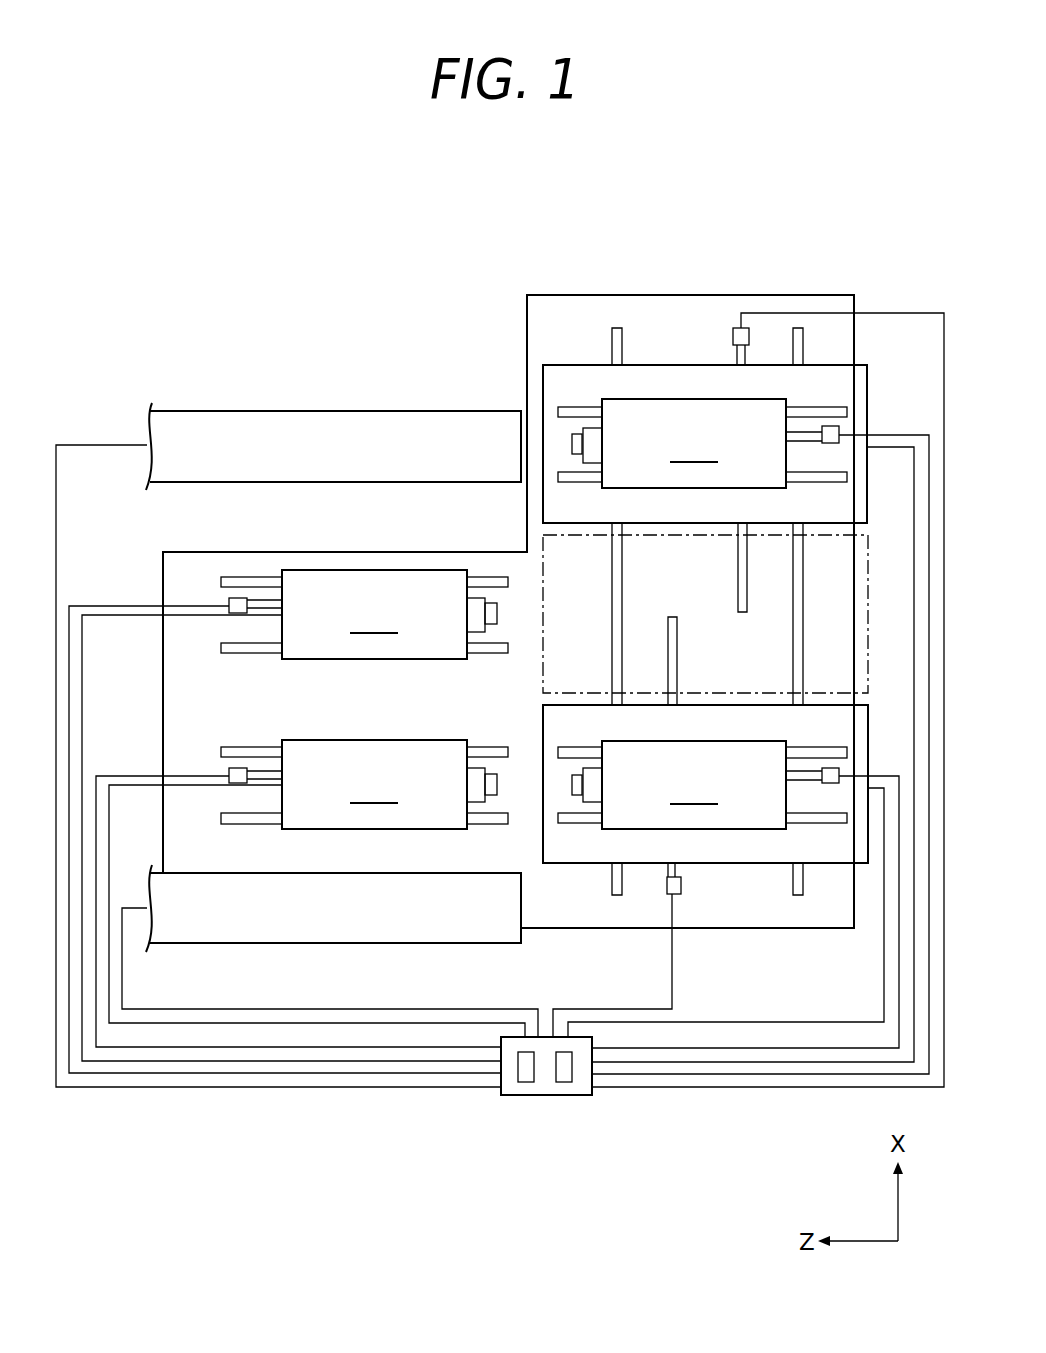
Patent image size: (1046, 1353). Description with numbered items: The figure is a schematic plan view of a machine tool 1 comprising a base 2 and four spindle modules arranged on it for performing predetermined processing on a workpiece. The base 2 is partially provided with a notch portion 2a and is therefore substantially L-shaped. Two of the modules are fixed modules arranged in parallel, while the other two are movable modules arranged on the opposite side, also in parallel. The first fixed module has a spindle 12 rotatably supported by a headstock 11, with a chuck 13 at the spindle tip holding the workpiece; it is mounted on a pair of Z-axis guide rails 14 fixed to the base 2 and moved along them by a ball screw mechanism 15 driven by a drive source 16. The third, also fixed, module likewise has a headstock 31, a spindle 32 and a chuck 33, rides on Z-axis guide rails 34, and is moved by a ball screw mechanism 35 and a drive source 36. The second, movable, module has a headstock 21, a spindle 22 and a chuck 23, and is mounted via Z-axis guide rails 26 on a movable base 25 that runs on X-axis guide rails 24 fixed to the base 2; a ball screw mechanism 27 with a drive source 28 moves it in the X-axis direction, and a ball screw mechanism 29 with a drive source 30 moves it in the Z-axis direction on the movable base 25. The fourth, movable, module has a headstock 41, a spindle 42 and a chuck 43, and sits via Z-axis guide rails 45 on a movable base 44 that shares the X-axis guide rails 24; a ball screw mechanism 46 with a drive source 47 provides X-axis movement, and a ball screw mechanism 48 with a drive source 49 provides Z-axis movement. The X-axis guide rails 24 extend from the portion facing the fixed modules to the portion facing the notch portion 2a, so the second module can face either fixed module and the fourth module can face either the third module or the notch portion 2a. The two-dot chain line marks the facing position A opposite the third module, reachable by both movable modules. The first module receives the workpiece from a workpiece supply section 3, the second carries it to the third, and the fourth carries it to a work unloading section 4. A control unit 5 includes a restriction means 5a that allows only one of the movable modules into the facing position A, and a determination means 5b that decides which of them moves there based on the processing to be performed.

The machine tool 1 is at (801, 203).
The base 2 is at (823, 295).
The notch portion 2a is at (527, 341).
The workpiece supply section 3 is at (335, 930).
The work unloading section 4 is at (327, 423).
The control unit 5 is at (545, 1107).
The restriction means 5a is at (525, 1072).
The determination means 5b is at (565, 1072).
The headstock 11 is at (373, 747).
The spindle 12 is at (470, 780).
The chuck 13 is at (490, 773).
The Z-axis guide rails 14 is at (273, 753).
The ball screw mechanism 15 is at (258, 773).
The drive source 16 is at (229, 772).
The headstock 21 is at (705, 750).
The spindle 22 is at (595, 788).
The chuck 23 is at (578, 778).
The X-axis guide rails 24 is at (612, 882).
The movable base 25 is at (700, 855).
The Z-axis guide rails 26 is at (822, 752).
The ball screw mechanism 27 is at (667, 882).
The drive source 28 is at (668, 900).
The ball screw mechanism 29 is at (800, 774).
The drive source 30 is at (839, 773).
The headstock 31 is at (377, 572).
The spindle 32 is at (470, 610).
The chuck 33 is at (490, 602).
The Z-axis guide rails 34 is at (273, 583).
The ball screw mechanism 35 is at (258, 603).
The drive source 36 is at (229, 602).
The headstock 41 is at (738, 407).
The spindle 42 is at (595, 445).
The chuck 43 is at (578, 437).
The movable base 44 is at (664, 380).
The Z-axis guide rails 45 is at (835, 412).
The ball screw mechanism 46 is at (748, 358).
The drive source 47 is at (733, 333).
The ball screw mechanism 48 is at (803, 433).
The drive source 49 is at (839, 432).
The facing position A is at (870, 613).